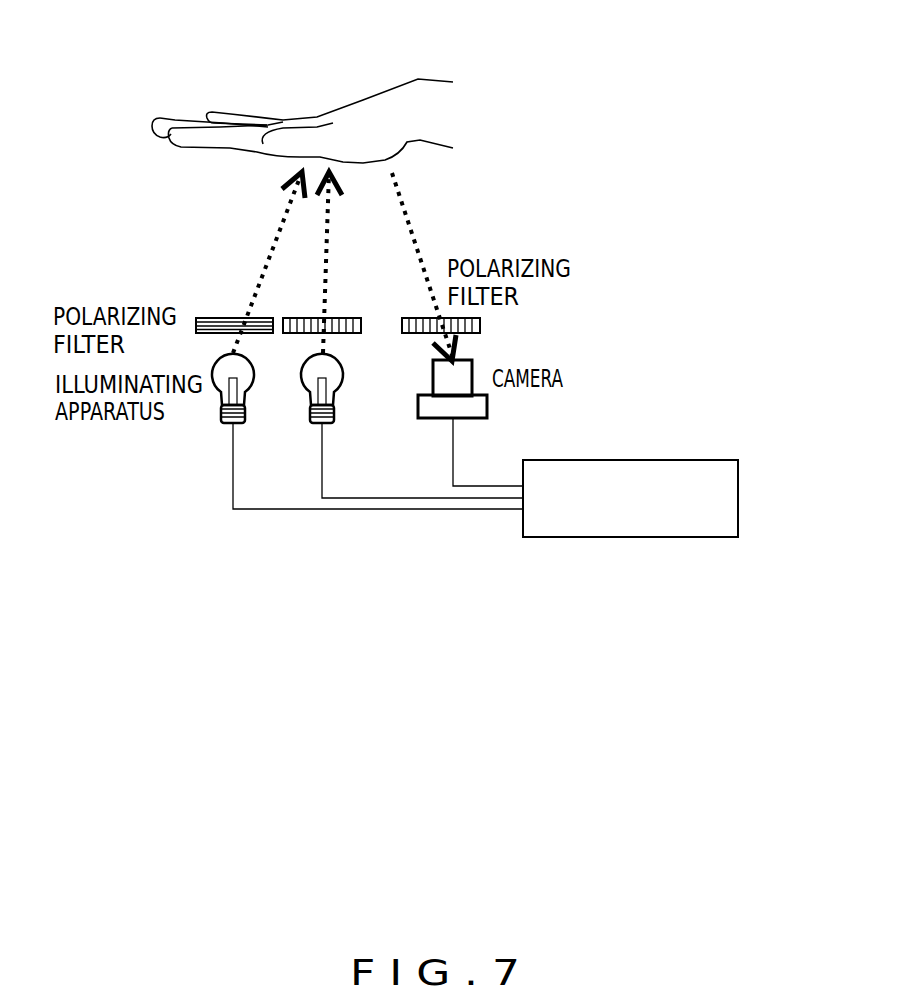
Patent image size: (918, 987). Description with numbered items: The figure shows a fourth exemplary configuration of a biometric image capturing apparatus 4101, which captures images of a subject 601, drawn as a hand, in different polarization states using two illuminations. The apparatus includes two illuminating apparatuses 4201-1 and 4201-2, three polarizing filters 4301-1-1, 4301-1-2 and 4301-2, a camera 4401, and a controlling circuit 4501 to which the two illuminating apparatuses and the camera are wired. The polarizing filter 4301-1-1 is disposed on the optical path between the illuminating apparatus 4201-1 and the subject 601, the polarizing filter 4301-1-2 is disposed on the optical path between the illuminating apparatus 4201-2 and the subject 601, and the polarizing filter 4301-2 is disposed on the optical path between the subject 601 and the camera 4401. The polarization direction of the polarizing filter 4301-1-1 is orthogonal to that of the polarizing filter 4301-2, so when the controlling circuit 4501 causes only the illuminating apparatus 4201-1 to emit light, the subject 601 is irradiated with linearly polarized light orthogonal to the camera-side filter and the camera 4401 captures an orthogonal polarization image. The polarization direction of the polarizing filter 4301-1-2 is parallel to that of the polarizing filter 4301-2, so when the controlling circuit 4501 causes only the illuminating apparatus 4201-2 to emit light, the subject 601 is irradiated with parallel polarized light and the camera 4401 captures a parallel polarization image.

The subject 601 is at (440, 90).
The biometric image capturing apparatus 4101 is at (731, 393).
The illuminating apparatus 4201-1 is at (222, 398).
The illuminating apparatus 4201-2 is at (308, 398).
The polarizing filter 4301-1-1 is at (225, 317).
The polarizing filter 4301-1-2 is at (361, 327).
The polarizing filter 4301-2 is at (480, 325).
The camera 4401 is at (467, 418).
The controlling circuit 4501 is at (738, 485).